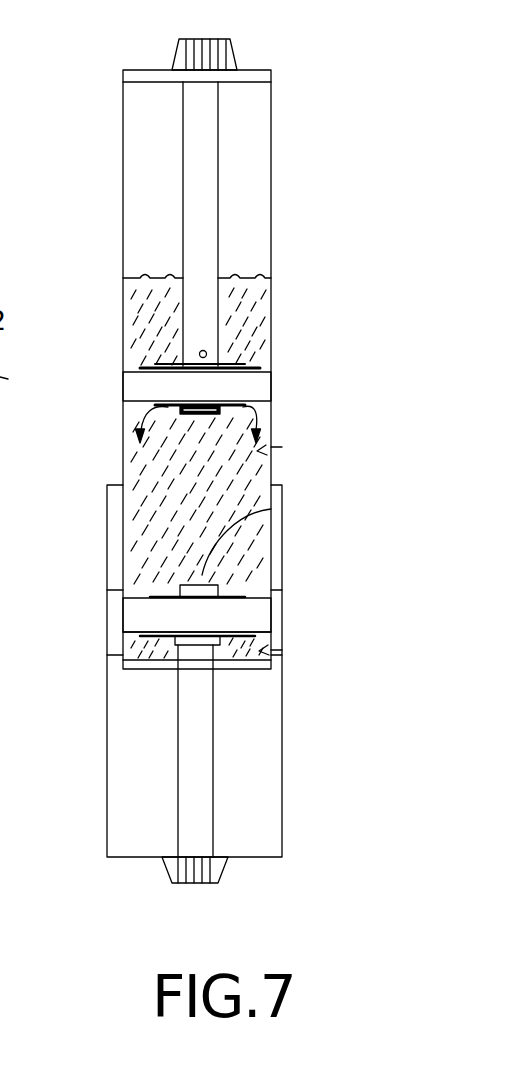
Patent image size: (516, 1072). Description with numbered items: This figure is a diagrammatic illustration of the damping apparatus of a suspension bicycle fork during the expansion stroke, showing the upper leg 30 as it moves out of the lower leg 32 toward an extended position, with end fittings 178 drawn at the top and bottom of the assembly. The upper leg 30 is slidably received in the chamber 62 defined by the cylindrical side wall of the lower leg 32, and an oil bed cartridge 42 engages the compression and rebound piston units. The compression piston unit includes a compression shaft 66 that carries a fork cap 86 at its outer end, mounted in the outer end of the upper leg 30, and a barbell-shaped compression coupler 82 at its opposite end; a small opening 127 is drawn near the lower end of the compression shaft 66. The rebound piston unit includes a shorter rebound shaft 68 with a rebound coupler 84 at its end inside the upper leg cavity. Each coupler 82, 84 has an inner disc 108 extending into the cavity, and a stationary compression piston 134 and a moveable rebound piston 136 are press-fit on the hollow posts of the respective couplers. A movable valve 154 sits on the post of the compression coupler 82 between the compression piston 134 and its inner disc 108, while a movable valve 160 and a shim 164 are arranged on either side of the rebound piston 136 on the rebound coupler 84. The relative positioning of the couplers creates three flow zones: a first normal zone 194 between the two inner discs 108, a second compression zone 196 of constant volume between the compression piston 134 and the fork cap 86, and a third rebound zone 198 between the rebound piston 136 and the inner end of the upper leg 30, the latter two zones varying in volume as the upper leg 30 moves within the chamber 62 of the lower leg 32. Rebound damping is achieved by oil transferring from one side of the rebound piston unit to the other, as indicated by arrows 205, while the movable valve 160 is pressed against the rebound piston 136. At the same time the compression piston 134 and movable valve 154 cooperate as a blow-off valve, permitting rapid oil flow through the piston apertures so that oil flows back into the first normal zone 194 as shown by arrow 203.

The upper leg 30 is at (274, 135).
The lower leg 32 is at (283, 722).
The oil bed cartridge 42 is at (283, 448).
The chamber 62 is at (139, 727).
The compression shaft 66 is at (199, 247).
The rebound shaft 68 is at (198, 797).
The compression coupler 82 is at (177, 433).
The rebound coupler 84 is at (160, 585).
The fork cap 86 is at (258, 80).
The inner disc 108 is at (208, 418).
The orifice 127 is at (207, 350).
The compression piston 134 is at (247, 383).
The rebound piston 136 is at (252, 617).
The movable valve 154 is at (258, 358).
The movable valve 160 is at (152, 640).
The shim 164 is at (245, 596).
The end fitting 178 is at (232, 44).
The first normal zone 194 is at (155, 517).
The second compression zone 196 is at (142, 232).
The third rebound zone 198 is at (258, 648).
The arrow 203 is at (262, 412).
The arrows 205 is at (271, 509).